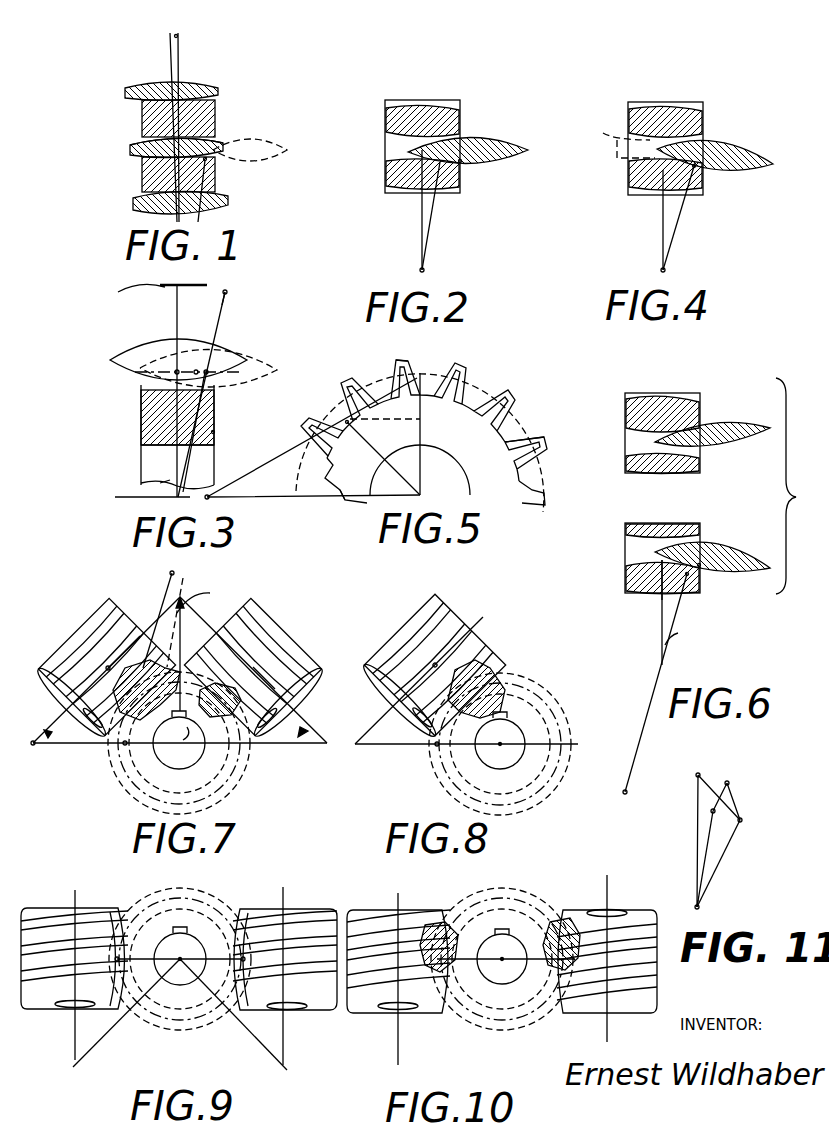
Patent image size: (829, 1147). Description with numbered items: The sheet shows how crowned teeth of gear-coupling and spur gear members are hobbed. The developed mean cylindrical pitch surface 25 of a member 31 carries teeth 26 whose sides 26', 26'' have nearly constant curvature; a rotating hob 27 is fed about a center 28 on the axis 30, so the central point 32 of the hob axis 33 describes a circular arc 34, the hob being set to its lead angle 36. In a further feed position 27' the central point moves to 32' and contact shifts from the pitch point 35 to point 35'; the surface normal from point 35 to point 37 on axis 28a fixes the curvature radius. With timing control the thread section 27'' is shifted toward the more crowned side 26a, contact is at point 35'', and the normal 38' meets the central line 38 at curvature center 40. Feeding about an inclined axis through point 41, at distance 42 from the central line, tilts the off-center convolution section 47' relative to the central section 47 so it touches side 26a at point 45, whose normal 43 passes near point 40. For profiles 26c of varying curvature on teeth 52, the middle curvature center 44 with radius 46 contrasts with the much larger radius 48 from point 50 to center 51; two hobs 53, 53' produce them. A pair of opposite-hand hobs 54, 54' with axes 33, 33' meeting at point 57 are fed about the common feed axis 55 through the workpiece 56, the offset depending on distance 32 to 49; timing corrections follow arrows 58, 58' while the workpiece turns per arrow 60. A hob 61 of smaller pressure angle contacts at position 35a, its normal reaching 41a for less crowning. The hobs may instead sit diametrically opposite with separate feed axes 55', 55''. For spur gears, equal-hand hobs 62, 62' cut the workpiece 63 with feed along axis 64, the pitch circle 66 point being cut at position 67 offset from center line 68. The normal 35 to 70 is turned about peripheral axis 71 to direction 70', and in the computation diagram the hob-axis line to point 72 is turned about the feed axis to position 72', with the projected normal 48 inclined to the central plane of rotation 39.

In FIG. 3, the pitch surface 25 is at (140, 380).
In FIG. 5, the pitch surface 25 is at (470, 372).
In FIG. 1, the teeth 26 is at (201, 107).
In FIG. 2, the teeth 26 is at (400, 146).
In FIG. 1, the tooth side 26' is at (153, 98).
In FIG. 1, the tooth side 26'' is at (154, 143).
In FIG. 2, the tooth side 26a is at (400, 160).
In FIG. 4, the tooth side 26a is at (640, 160).
In FIG. 6, the longitudinal profile 26c is at (640, 570).
In FIG. 1, the hob 27 is at (189, 128).
In FIG. 3, the hob 27 is at (166, 350).
In FIG. 1, the hob feed position 27' is at (257, 135).
In FIG. 3, the hob feed position 27' is at (208, 386).
In FIG. 2, the hob thread convolution section 27'' is at (470, 137).
In FIG. 3, the center 28 is at (160, 471).
In FIG. 5, the center 28 is at (425, 495).
In FIG. 7, the center 28 is at (186, 768).
In FIG. 9, the center 28 is at (185, 947).
In FIG. 5, the axis 28a is at (352, 490).
In FIG. 3, the axis 30 is at (122, 497).
In FIG. 5, the axis 30 is at (459, 434).
In FIG. 7, the axis 30 is at (176, 760).
In FIG. 8, the axis 30 is at (490, 768).
In FIG. 9, the axis 30 is at (165, 950).
In FIG. 3, the member 31 is at (214, 433).
In FIG. 5, the member 31 is at (520, 416).
In FIG. 3, the central point 32 is at (173, 391).
In FIG. 7, the central point 32 is at (65, 652).
In FIG. 3, the displaced central point 32' is at (243, 309).
In FIG. 1, the hob axis 33 is at (153, 127).
In FIG. 3, the hob axis 33 is at (120, 291).
In FIG. 7, the hob axis 33 is at (132, 633).
In FIG. 7, the hob axis 33' is at (297, 689).
In FIG. 3, the circular arc 34 is at (232, 292).
In FIG. 1, the pitch point 35 is at (161, 185).
In FIG. 3, the pitch point 35 is at (156, 345).
In FIG. 5, the pitch point 35 is at (421, 359).
In FIG. 7, the pitch point 35 is at (146, 719).
In FIG. 11, the pitch point 35 is at (716, 922).
In FIG. 1, the contact point 35' is at (231, 190).
In FIG. 3, the contact point 35' is at (224, 409).
In FIG. 2, the contact point 35'' is at (489, 179).
In FIG. 3, the contact point 35'' is at (199, 345).
In FIG. 8, the contact position 35a is at (502, 672).
In FIG. 1, the lead angle 36 is at (179, 38).
In FIG. 3, the intersection point 37 is at (238, 497).
In FIG. 2, the central line 38 is at (402, 210).
In FIG. 4, the central line 38 is at (644, 220).
In FIG. 2, the normal 38' is at (447, 216).
In FIG. 6, the central plane of rotation 39 is at (662, 650).
In FIG. 2, the curvature center 40 is at (425, 270).
In FIG. 4, the curvature center 40 is at (666, 270).
In FIG. 5, the point 41 is at (342, 430).
In FIG. 7, the point 41 is at (124, 746).
In FIG. 8, the intersection point 41a is at (436, 750).
In FIG. 5, the distance 42 is at (372, 420).
In FIG. 4, the normal 43 is at (677, 216).
In FIG. 6, the curvature center 44 is at (660, 585).
In FIG. 4, the contact point 45 is at (695, 168).
In FIG. 6, the curvature radius 46 is at (682, 580).
In FIG. 4, the hob convolution section 47 is at (622, 132).
In FIG. 4, the off-center hob convolution section 47' is at (715, 143).
In FIG. 6, the curvature radius 48 is at (668, 660).
In FIG. 7, the point 49 is at (33, 746).
In FIG. 6, the point 50 is at (700, 566).
In FIG. 6, the curvature center 51 is at (625, 792).
In FIG. 6, the teeth 52 is at (630, 410).
In FIG. 6, the hob 53 is at (715, 547).
In FIG. 6, the hob 53' is at (714, 421).
In FIG. 7, the hob 54 is at (104, 670).
In FIG. 9, the hob 54 is at (74, 966).
In FIG. 7, the hob 54' is at (256, 670).
In FIG. 9, the hob 54' is at (285, 974).
In FIG. 7, the feed axis 55 is at (180, 755).
In FIG. 8, the feed axis 55 is at (476, 728).
In FIG. 11, the feed axis 55 is at (729, 920).
In FIG. 9, the feed axis 55' is at (126, 1013).
In FIG. 9, the feed axis 55'' is at (233, 1014).
In FIG. 7, the workpiece 56 is at (225, 792).
In FIG. 9, the workpiece 56 is at (150, 915).
In FIG. 7, the intersection point 57 is at (208, 595).
In FIG. 7, the arrow 58 is at (106, 682).
In FIG. 7, the arrow 58' is at (265, 670).
In FIG. 7, the arrow 60 is at (186, 755).
In FIG. 8, the hob 61 is at (400, 668).
In FIG. 10, the hob 62 is at (398, 970).
In FIG. 10, the hob 62' is at (631, 958).
In FIG. 10, the workpiece 63 is at (518, 1012).
In FIG. 10, the axis 64 is at (497, 965).
In FIG. 10, the pitch circle 66 is at (460, 907).
In FIG. 10, the cutting position 67 is at (432, 928).
In FIG. 10, the center line 68 is at (465, 968).
In FIG. 7, the normal end point 70 is at (153, 615).
In FIG. 11, the normal end point 70 is at (701, 831).
In FIG. 7, the turned normal end point 70' is at (195, 610).
In FIG. 11, the turned normal end point 70' is at (745, 795).
In FIG. 7, the axis 71 is at (193, 654).
In FIG. 11, the point 72 is at (687, 850).
In FIG. 11, the turned point 72' is at (743, 862).